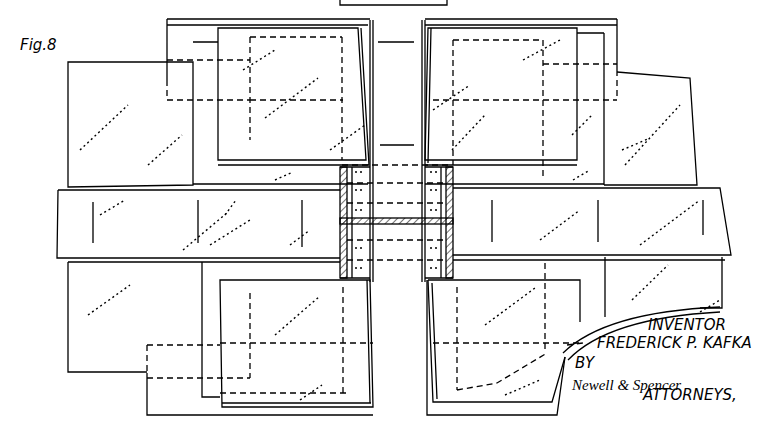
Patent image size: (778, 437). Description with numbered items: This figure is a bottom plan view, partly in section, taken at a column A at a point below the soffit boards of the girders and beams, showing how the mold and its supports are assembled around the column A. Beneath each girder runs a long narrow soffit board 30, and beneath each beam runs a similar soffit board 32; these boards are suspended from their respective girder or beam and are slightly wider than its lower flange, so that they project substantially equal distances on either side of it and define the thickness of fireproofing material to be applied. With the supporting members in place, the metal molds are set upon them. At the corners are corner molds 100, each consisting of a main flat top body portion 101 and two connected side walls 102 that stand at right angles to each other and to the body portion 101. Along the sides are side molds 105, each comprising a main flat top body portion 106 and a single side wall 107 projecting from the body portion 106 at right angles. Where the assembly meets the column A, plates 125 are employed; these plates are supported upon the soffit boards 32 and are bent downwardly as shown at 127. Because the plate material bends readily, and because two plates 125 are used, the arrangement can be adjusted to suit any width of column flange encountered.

The soffit boards 30 is at (62, 206).
The soffit boards 32 is at (392, 28).
The corner molds 100 is at (182, 313).
The main flat top body portion 101 is at (222, 120).
The side walls 102 is at (363, 50).
The side molds 105 is at (170, 43).
The main flat top body portion 106 is at (75, 160).
The side wall 107 is at (107, 185).
The plates 125 is at (387, 280).
The bent-down portion 127 is at (363, 197).
The column A is at (455, 216).